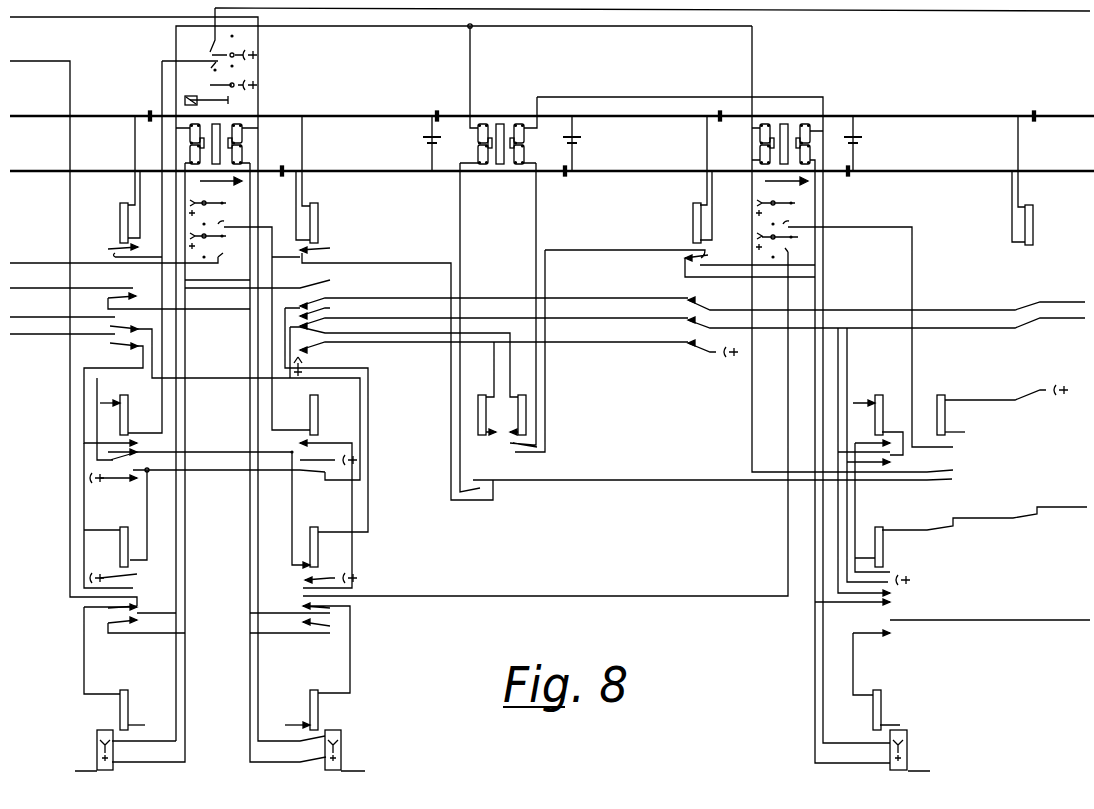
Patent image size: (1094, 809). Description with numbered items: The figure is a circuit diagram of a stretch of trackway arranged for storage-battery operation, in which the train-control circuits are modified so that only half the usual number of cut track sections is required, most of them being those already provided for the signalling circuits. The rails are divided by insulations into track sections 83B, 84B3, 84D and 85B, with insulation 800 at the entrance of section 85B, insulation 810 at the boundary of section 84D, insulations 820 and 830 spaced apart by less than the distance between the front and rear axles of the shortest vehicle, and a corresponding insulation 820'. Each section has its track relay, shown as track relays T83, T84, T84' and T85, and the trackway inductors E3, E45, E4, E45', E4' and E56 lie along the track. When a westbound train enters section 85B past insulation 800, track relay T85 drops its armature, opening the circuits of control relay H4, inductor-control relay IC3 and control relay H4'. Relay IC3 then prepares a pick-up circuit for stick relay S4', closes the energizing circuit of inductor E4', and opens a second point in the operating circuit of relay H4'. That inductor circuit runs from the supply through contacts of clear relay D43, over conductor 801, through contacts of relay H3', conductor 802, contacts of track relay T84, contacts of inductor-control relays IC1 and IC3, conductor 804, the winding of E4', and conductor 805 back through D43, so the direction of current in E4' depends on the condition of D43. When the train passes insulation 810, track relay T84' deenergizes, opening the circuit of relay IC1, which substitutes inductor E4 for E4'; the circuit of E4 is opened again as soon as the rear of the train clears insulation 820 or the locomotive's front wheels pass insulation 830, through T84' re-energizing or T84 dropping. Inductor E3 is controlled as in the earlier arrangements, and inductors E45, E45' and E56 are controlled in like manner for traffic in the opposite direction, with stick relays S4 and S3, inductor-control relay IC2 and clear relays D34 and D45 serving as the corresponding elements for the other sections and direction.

The track section 83B is at (146, 143).
The track section 84B3 is at (357, 143).
The track section 84D is at (642, 143).
The track section 85B is at (907, 143).
The insulation 830 is at (437, 110).
The insulation 810 is at (720, 110).
The insulation 800 is at (1034, 110).
The insulation 820 is at (576, 182).
The insulated rail joint 820' is at (864, 182).
The conductor 805 is at (527, 27).
The conductor 804 is at (752, 405).
The conductor 802 is at (186, 545).
The conductor 801 is at (186, 745).
The inductor E3 is at (190, 140).
The trackway inductor E45 is at (257, 144).
The inductor E4 is at (485, 131).
The trackway inductor E45' is at (524, 131).
The inductor E4' is at (770, 131).
The trackway inductor E56 is at (805, 124).
The track relay T83 is at (120, 225).
The track relay T84 is at (322, 179).
The track relay T84' is at (683, 179).
The track relay T85 is at (1033, 225).
The signal relay S4 is at (123, 415).
The signal relay S3 is at (326, 544).
The stick relay S4' is at (879, 425).
The inductor-control relay IC1 is at (474, 407).
The indication relay IC2 is at (520, 407).
The inductor-control relay IC3 is at (954, 415).
The control relay H3' is at (115, 515).
The control relay H4 is at (325, 547).
The control relay H4' is at (981, 537).
The clear-control relay D43 is at (110, 730).
The distant relay D34 is at (325, 730).
The distant relay D45 is at (971, 695).